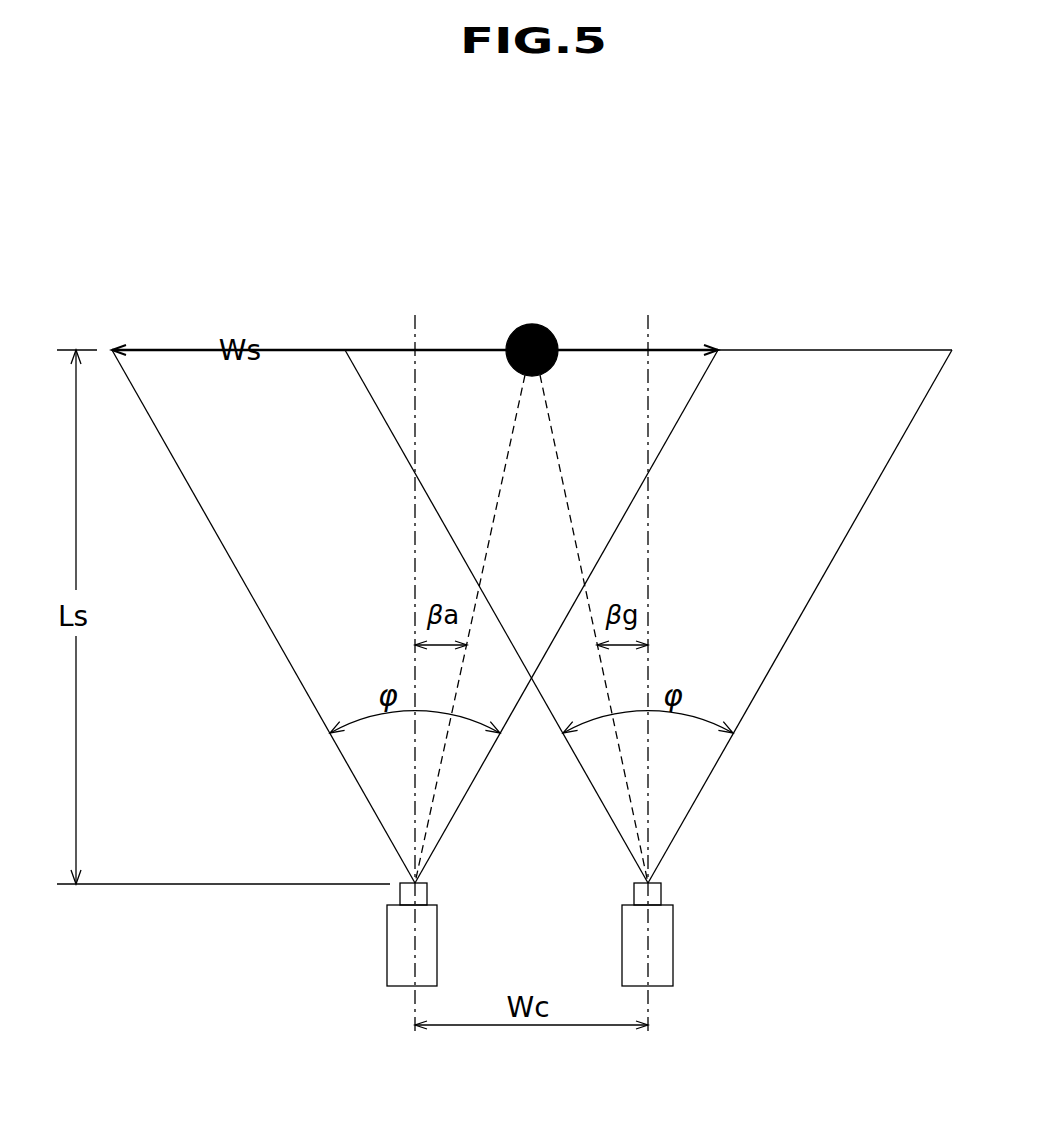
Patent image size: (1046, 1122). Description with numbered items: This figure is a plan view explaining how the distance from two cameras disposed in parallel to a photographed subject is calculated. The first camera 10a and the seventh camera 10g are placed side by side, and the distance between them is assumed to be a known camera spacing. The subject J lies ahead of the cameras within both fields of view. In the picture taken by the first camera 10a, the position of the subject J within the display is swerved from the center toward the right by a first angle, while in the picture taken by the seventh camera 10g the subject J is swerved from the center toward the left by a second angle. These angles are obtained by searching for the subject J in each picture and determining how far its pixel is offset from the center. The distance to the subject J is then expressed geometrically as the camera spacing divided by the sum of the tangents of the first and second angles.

The first camera 10a is at (397, 988).
The seventh camera 10g is at (660, 988).
The subject J is at (508, 335).